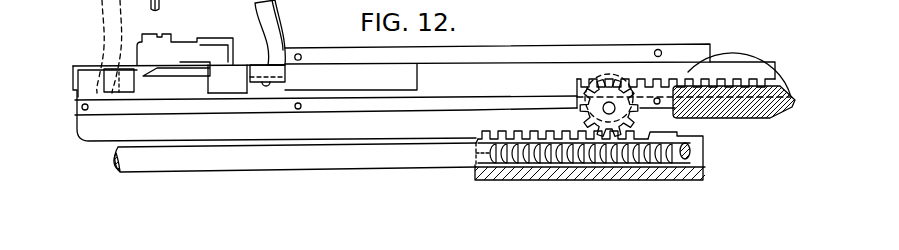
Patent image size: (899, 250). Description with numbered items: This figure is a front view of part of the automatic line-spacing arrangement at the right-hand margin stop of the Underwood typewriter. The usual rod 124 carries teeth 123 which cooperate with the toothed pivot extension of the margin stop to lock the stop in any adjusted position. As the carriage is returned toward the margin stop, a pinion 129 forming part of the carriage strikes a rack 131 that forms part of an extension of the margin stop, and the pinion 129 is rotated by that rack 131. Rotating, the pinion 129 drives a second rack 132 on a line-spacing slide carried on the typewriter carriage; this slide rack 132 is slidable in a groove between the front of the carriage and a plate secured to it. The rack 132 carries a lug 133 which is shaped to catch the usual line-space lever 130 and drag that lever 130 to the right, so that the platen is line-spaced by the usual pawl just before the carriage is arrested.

The teeth 123 is at (490, 162).
The rod 124 is at (332, 170).
The pinion 129 is at (590, 113).
The line-spacing handle 130 is at (281, 22).
The rack 131 is at (489, 131).
The rack 132 is at (665, 75).
The lug 133 is at (227, 79).